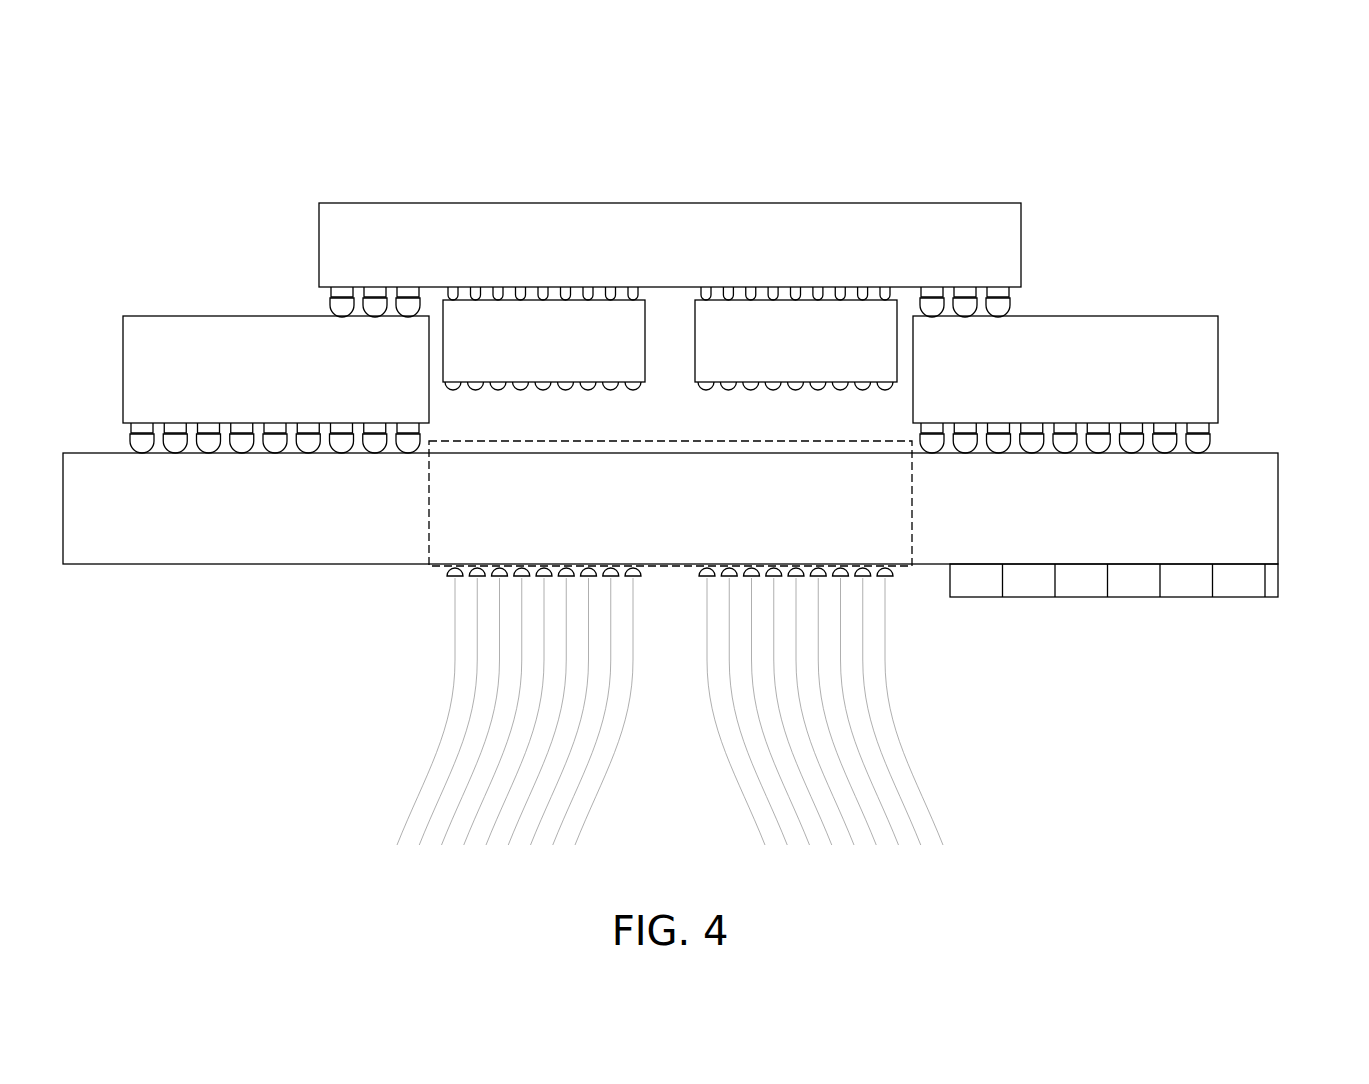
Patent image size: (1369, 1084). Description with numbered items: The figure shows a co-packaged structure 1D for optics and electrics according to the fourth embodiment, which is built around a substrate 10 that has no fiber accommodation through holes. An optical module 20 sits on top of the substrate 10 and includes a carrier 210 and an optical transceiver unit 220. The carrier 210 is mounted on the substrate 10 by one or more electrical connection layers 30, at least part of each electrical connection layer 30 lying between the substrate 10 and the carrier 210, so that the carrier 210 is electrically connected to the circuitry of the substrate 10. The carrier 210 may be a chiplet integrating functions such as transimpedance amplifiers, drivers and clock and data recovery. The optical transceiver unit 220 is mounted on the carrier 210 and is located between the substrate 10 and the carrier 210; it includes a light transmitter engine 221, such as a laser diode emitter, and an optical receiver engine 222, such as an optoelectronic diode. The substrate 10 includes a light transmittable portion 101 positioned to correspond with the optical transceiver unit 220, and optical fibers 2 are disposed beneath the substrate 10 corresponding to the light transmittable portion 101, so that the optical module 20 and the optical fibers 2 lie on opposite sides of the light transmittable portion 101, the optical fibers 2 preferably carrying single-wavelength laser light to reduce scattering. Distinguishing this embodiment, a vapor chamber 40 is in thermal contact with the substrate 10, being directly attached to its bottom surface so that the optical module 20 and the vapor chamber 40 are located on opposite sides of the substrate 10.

The co-packaged structure 1D is at (130, 74).
The optical module 20 is at (737, 100).
The carrier 210 is at (432, 222).
The optical transceiver unit 220 is at (862, 140).
The light transmitter engine 221 is at (558, 313).
The optical receiver engine 222 is at (809, 313).
The electrical connection layer 30 is at (166, 325).
The substrate 10 is at (1268, 508).
The light transmittable portion 101 is at (429, 537).
The vapor chamber 40 is at (1270, 580).
The optical fibers 2 is at (436, 760).